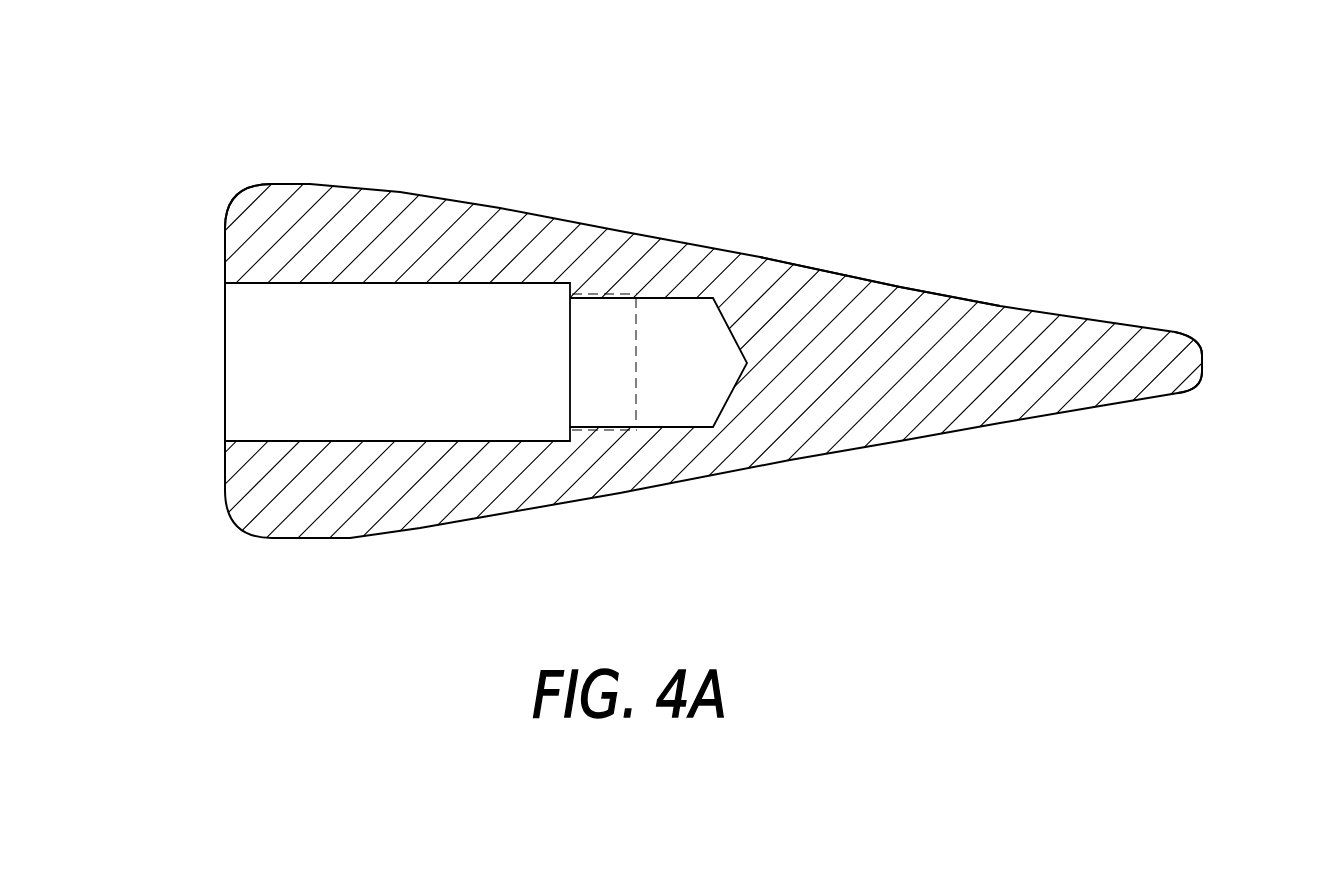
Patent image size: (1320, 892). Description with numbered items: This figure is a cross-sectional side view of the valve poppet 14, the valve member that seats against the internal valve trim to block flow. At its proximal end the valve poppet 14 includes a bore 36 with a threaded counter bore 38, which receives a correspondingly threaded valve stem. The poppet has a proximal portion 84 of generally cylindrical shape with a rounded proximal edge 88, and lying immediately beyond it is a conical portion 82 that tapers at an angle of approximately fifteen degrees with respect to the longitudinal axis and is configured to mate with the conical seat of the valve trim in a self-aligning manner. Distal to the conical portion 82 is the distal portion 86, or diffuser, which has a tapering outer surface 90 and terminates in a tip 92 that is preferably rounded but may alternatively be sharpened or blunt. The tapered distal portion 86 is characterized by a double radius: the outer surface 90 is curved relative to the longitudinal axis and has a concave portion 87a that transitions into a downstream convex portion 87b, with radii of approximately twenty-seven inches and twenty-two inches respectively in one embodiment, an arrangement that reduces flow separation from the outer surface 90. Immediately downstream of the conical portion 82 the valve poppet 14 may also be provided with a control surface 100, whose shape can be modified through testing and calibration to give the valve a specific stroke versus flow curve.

The valve poppet 14 is at (1113, 127).
The bore 36 is at (477, 285).
The threaded counter bore 38 is at (679, 293).
The conical portion 82 is at (363, 178).
The proximal portion 84 is at (291, 182).
The distal portion 86 is at (835, 227).
The concave portion 87a is at (797, 478).
The convex portion 87b is at (797, 478).
The rounded proximal edge 88 is at (222, 193).
The tapering outer surface 90 is at (910, 290).
The tip 92 is at (1205, 330).
The control surface 100 is at (468, 540).